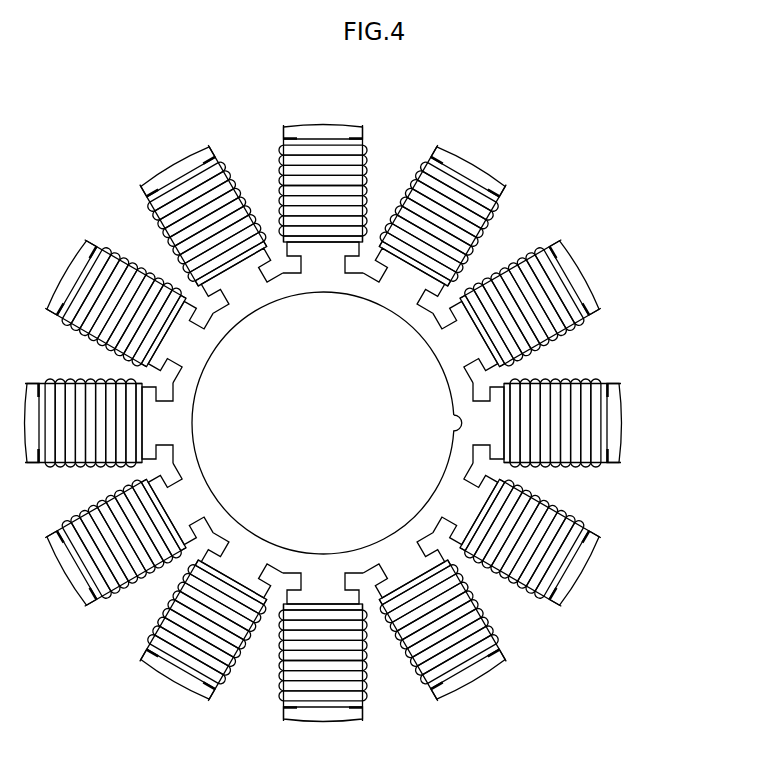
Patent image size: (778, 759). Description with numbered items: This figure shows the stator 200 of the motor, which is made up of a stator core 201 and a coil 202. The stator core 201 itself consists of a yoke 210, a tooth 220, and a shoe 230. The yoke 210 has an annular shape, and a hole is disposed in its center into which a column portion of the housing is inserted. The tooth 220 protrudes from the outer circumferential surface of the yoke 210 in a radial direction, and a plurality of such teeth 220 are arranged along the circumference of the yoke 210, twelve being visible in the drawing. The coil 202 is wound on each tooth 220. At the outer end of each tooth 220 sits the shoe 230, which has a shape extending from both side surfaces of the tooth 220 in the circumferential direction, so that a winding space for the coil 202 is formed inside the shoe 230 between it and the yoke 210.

The stator 200 is at (84, 100).
The stator core 201 is at (586, 270).
The coil 202 is at (512, 265).
The yoke 210 is at (462, 387).
The tooth 220 is at (467, 340).
The shoe 230 is at (578, 284).